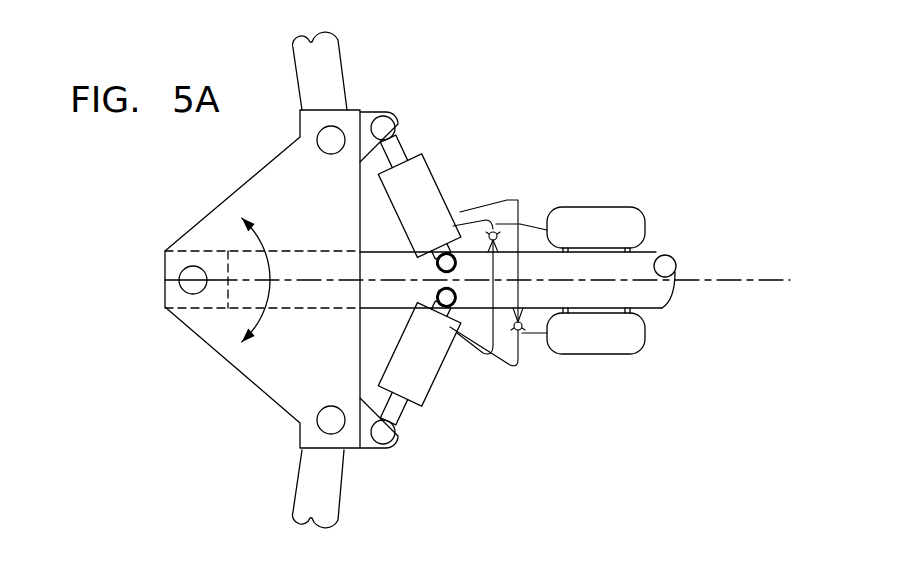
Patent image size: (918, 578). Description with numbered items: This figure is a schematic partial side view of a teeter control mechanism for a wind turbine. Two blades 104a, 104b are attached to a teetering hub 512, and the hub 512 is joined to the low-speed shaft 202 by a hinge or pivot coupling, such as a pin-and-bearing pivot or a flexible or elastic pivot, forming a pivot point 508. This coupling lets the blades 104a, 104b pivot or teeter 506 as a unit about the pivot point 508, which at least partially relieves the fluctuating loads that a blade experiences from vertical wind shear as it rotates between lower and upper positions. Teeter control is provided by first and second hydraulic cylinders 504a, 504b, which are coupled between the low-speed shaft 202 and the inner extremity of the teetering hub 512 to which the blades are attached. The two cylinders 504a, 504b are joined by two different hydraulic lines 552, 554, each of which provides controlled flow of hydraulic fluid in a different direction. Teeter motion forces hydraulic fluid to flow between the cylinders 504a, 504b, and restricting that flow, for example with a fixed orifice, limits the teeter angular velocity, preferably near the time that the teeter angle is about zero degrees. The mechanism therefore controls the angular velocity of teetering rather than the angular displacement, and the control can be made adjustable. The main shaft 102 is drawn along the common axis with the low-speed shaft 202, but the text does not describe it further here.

The shaft 102 is at (713, 278).
The low-speed shaft 202 is at (663, 306).
The blade 104a is at (332, 498).
The blade 104b is at (343, 60).
The first hydraulic cylinder 504a is at (433, 411).
The second hydraulic cylinder 504b is at (433, 149).
The teeter 506 is at (264, 245).
The pivot point 508 is at (185, 295).
The hub 512 is at (176, 258).
The hydraulic line 552 is at (478, 208).
The hydraulic line 554 is at (520, 201).